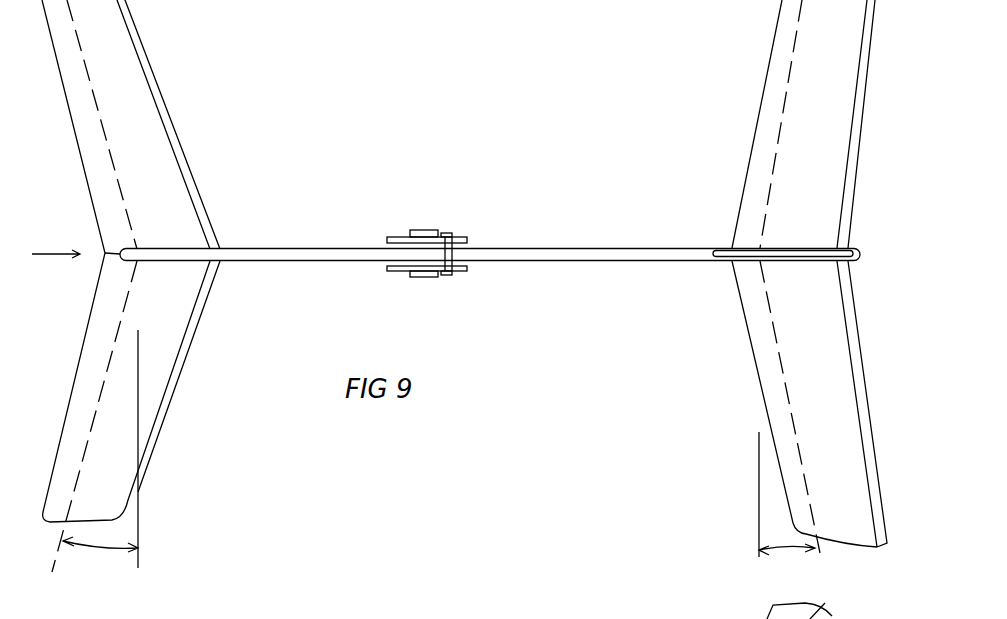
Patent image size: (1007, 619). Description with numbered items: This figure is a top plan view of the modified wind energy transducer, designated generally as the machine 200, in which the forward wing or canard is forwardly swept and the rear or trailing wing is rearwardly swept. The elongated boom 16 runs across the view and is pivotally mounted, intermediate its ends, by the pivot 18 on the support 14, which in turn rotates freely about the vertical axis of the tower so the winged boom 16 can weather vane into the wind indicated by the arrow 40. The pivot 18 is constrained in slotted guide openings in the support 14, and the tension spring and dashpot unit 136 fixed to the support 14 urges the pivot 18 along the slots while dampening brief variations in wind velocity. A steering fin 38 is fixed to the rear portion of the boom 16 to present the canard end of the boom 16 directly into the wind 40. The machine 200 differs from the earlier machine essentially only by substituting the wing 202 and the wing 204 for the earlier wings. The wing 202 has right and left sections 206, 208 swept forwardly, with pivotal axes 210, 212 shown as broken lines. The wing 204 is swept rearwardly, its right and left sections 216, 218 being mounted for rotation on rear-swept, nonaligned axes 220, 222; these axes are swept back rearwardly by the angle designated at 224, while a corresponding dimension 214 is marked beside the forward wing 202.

The machine 200 is at (404, 100).
The wind arrow 40 is at (43, 254).
The boom 16 is at (295, 247).
The steering fin 38 is at (733, 250).
The support 14 is at (400, 273).
The tension spring and dashpot unit 136 is at (422, 230).
The pivot 18 is at (447, 235).
The right section of forward wing 206 is at (140, 105).
The pivotal axis 210 is at (127, 207).
The pivotal axis 212 is at (115, 347).
The left section of forward wing 208 is at (163, 338).
The forward wing 202 is at (143, 402).
The offset distance of first wing 214 is at (90, 551).
The right section of rear wing 216 is at (828, 117).
The rear swept axis 220 is at (773, 158).
The rear swept axis 222 is at (765, 298).
The left section of rear wing 218 is at (837, 348).
The rear wing 204 is at (767, 377).
The sweep angle 224 is at (786, 553).